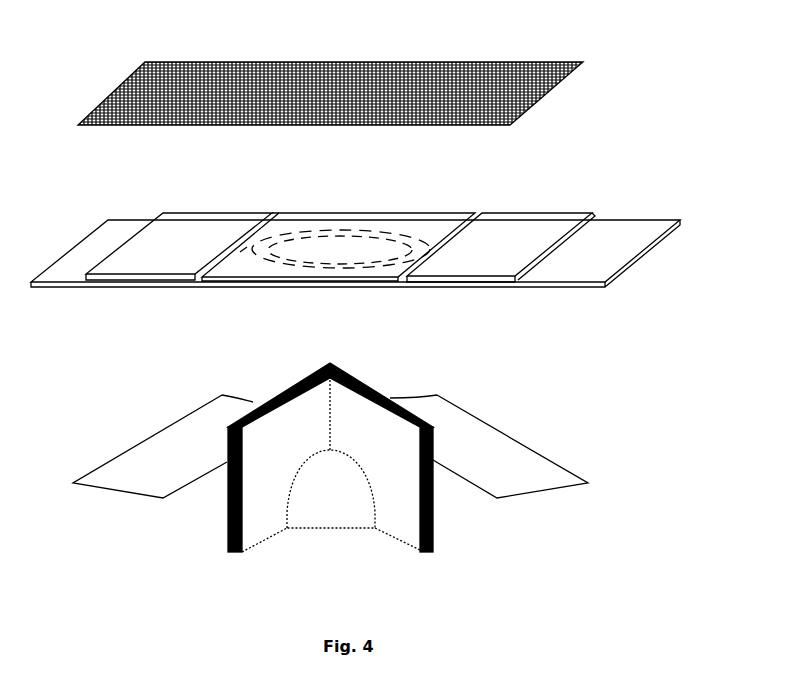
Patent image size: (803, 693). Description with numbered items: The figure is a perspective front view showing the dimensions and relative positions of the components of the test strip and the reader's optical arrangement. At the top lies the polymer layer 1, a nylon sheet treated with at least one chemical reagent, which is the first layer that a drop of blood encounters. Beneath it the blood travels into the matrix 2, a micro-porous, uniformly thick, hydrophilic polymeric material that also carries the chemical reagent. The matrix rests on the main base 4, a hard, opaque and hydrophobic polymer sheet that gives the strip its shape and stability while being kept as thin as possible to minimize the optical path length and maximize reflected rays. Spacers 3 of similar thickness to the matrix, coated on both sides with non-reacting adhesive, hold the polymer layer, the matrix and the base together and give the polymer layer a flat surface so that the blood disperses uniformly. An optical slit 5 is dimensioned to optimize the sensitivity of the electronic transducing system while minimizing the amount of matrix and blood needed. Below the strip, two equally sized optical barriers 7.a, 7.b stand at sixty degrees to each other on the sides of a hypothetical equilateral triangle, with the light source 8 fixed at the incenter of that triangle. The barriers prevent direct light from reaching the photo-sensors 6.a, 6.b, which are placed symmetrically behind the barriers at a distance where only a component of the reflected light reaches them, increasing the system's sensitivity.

The polymer layer 1 is at (573, 62).
The matrix 2 is at (465, 212).
The spacers 3 is at (190, 225).
The main base 4 is at (640, 233).
The optical slit 5 is at (297, 265).
The photo-sensor 6.a is at (92, 470).
The photo-sensor 6.b is at (565, 468).
The optical barrier 7.a is at (227, 500).
The optical barrier 7.b is at (433, 510).
The light source 8 is at (318, 525).